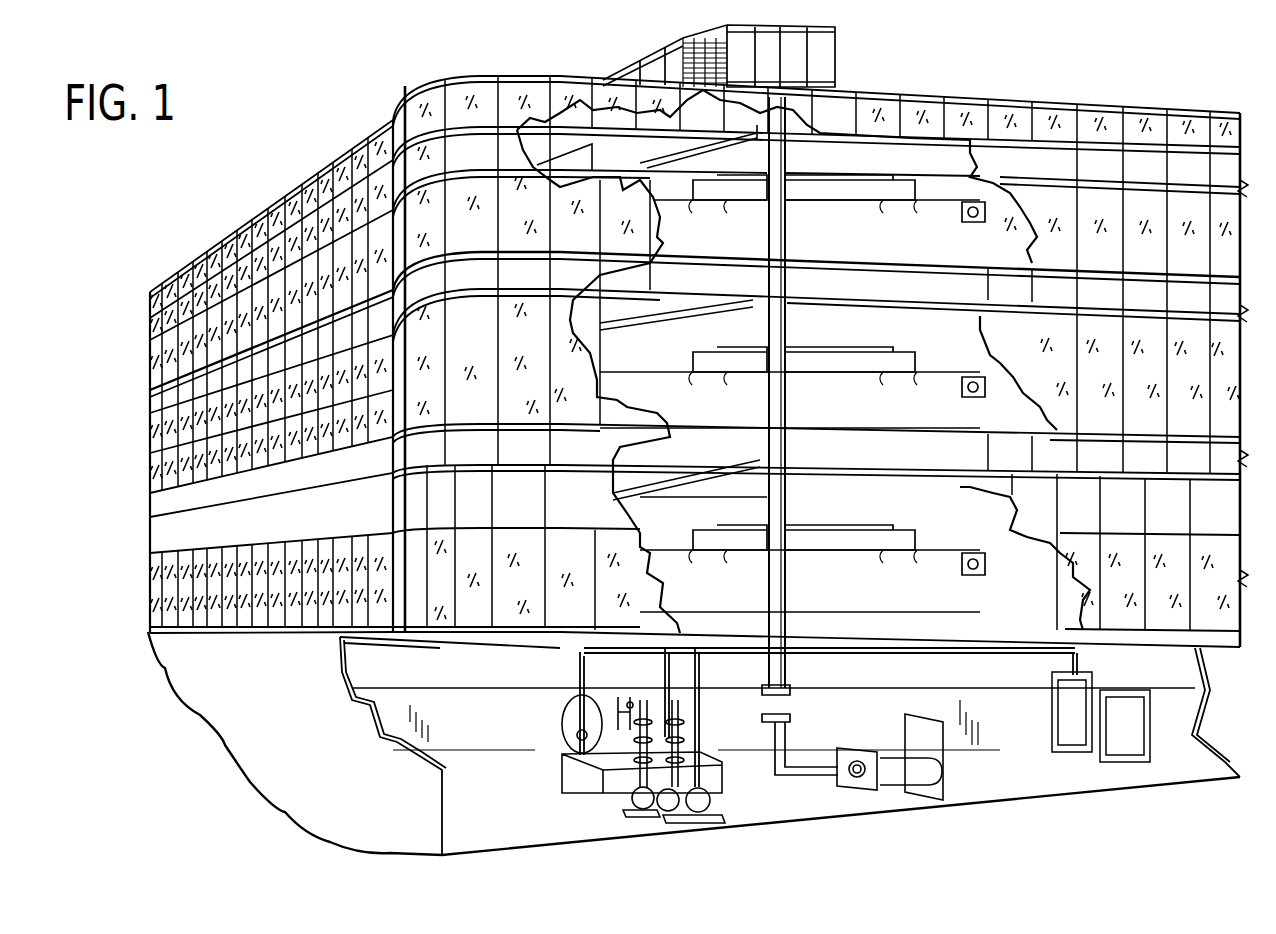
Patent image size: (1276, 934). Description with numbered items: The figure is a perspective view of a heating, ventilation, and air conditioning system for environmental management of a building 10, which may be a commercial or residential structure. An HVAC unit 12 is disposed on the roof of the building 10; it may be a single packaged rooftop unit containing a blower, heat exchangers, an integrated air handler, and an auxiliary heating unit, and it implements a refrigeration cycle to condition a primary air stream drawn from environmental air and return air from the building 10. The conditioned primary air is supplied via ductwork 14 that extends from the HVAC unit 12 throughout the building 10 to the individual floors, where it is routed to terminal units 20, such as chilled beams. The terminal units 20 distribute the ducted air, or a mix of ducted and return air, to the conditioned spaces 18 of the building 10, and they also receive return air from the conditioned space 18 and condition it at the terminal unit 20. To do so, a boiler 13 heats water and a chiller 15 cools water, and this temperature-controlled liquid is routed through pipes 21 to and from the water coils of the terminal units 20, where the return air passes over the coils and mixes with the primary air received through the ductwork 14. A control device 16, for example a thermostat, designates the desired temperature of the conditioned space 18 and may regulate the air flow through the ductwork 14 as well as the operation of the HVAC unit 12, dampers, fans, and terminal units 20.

The building 10 is at (1103, 98).
The HVAC unit 12 is at (690, 43).
The boiler 13 is at (730, 781).
The ductwork 14 is at (778, 234).
The chiller 15 is at (896, 788).
The control device 16 is at (973, 222).
The conditioned space 18 is at (889, 246).
The terminal unit 20 is at (707, 193).
The pipes 21 is at (785, 663).